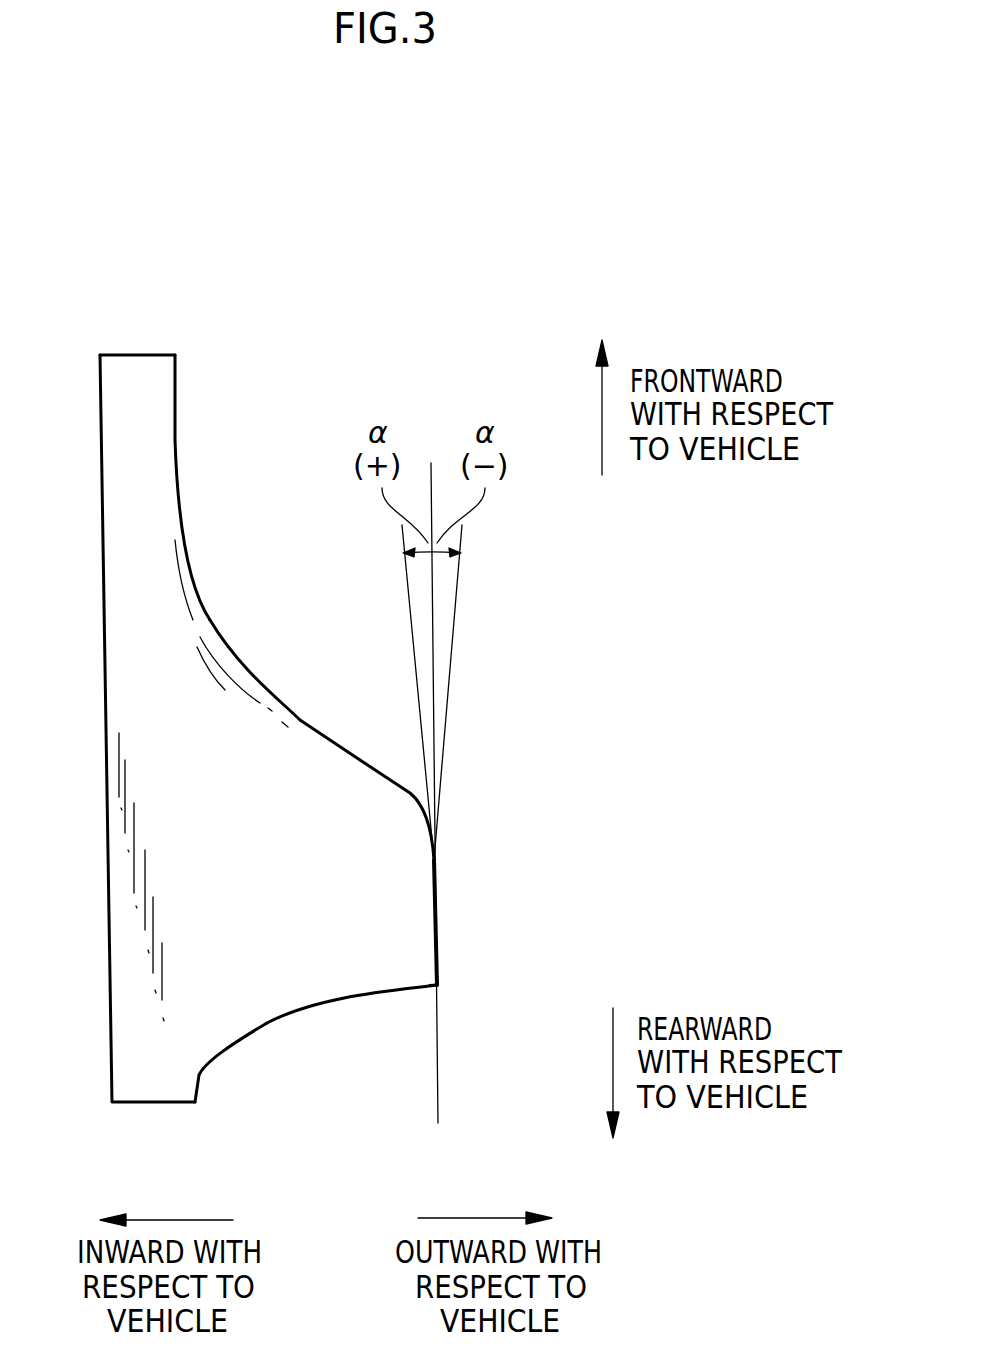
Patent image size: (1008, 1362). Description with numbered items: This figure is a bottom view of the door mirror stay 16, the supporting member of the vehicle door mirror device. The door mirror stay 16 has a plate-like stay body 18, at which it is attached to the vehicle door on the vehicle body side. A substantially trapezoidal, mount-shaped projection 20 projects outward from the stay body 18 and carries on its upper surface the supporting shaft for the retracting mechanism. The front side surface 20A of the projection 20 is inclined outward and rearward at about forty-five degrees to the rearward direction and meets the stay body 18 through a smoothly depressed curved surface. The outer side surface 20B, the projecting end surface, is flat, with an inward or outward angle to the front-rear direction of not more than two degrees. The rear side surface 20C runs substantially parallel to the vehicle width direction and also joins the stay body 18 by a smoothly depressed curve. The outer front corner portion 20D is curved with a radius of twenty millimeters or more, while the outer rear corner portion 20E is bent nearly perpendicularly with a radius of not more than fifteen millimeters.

The door mirror stay 16 is at (311, 297).
The stay body 18 is at (140, 473).
The projection 20 is at (275, 992).
The front side surface 20A is at (313, 727).
The outer side surface 20B is at (437, 898).
The rear side surface 20C is at (353, 1002).
The corner portion 20D is at (410, 790).
The corner portion 20E is at (437, 985).